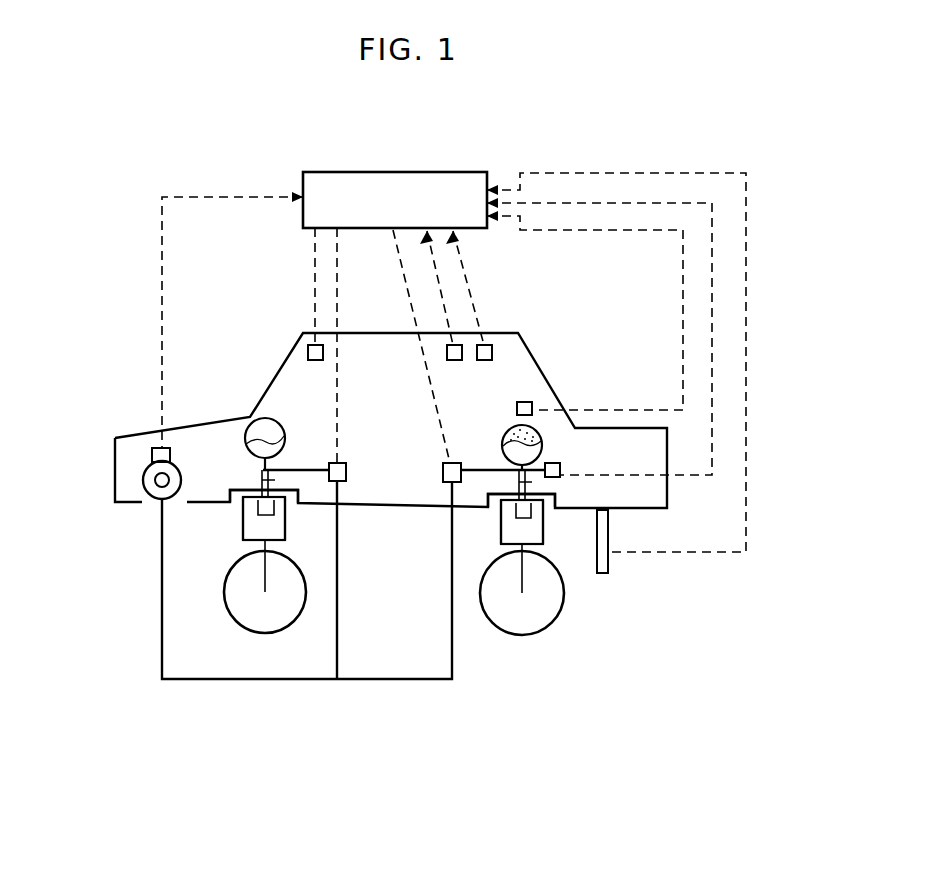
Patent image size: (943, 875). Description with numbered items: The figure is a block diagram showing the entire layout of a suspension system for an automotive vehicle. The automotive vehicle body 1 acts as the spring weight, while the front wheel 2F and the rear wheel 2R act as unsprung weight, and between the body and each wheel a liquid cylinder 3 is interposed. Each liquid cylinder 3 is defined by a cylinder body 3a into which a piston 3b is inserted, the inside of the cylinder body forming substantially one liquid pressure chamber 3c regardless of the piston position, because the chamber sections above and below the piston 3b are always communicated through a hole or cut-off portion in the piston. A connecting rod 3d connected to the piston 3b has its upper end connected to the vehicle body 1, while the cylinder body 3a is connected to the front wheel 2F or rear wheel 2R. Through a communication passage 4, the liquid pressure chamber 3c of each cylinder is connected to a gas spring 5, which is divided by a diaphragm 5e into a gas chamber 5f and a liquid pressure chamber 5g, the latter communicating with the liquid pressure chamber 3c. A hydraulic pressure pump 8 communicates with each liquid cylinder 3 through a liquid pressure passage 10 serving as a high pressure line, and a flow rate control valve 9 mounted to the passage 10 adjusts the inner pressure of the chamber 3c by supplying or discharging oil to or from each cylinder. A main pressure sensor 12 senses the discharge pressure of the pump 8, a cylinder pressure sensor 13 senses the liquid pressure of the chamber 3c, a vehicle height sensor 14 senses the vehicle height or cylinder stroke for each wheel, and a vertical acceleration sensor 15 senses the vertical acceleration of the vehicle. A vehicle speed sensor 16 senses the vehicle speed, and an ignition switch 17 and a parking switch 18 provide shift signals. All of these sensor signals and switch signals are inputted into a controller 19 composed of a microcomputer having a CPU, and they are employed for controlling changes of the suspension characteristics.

The automotive vehicle body 1 is at (268, 378).
The front wheel 2F is at (303, 611).
The rear wheel 2R is at (562, 611).
The liquid cylinder 3 is at (238, 546).
The cylinder body 3a is at (277, 515).
The piston 3b is at (285, 545).
The liquid pressure chamber 3c is at (395, 505).
The connecting rod 3d is at (243, 520).
The communication passage 4 is at (291, 466).
The gas spring 5 is at (253, 412).
The diaphragm 5e is at (247, 432).
The gas chamber 5f is at (276, 424).
The liquid pressure chamber 5g is at (250, 454).
The hydraulic pressure pump 8 is at (142, 487).
The flow rate control valve 9 is at (443, 469).
The liquid pressure passage 10 is at (297, 680).
The main pressure sensor 12 is at (156, 448).
The cylinder pressure sensor 13 is at (565, 468).
The vehicle height sensor 14 is at (608, 531).
The vertical acceleration sensor 15 is at (524, 402).
The vehicle speed sensor 16 is at (493, 337).
The ignition switch 17 is at (308, 349).
The parking switch 18 is at (447, 353).
The controller 19 is at (320, 172).